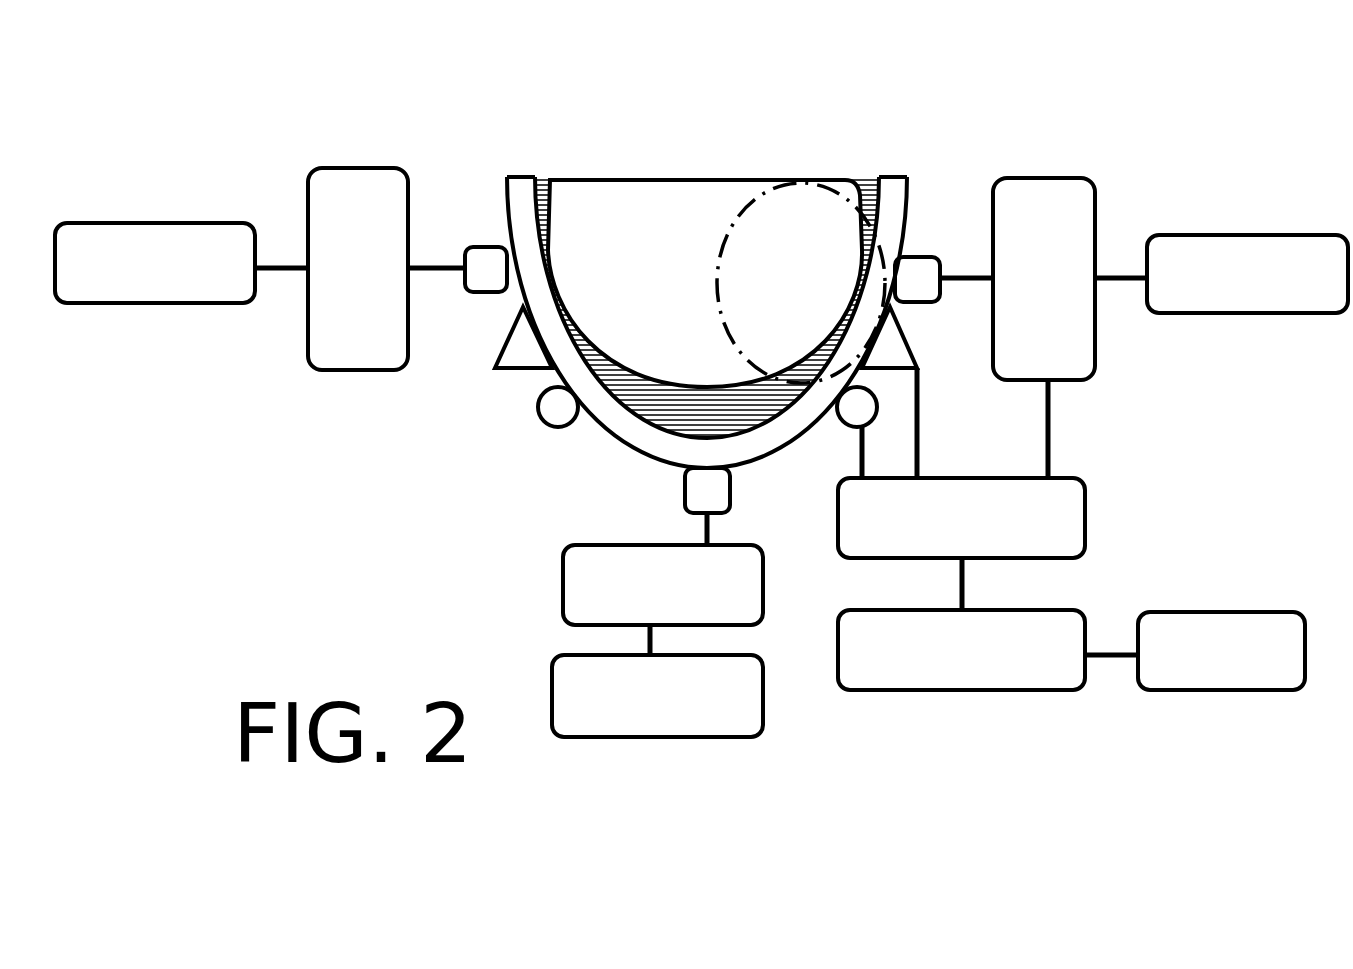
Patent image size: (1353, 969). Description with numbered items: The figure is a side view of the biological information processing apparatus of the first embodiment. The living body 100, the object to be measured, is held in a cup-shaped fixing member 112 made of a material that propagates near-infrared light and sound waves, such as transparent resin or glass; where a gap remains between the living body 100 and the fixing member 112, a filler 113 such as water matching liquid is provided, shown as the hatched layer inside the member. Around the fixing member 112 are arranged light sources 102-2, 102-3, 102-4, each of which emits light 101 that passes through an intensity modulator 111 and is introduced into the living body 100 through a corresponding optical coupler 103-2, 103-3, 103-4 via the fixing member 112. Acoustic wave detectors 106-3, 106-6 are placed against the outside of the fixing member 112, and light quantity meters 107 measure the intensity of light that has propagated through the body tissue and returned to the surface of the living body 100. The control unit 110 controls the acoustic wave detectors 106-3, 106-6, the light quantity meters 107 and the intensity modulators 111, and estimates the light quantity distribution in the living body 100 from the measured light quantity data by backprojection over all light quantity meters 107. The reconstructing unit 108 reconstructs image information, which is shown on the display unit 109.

The living body 100 is at (705, 283).
The light 101 is at (727, 325).
The light source 102-2 is at (1247, 274).
The light source 102-3 is at (657, 696).
The light source 102-4 is at (155, 263).
The optical coupler 103-2 is at (937, 264).
The optical coupler 103-3 is at (744, 493).
The optical coupler 103-4 is at (463, 254).
The acoustic wave detector 106-3 is at (921, 392).
The acoustic wave detector 106-6 is at (484, 337).
The light quantity meter 107 is at (685, 432).
The reconstructing unit 108 is at (961, 650).
The display unit 109 is at (1221, 651).
The control unit 110 is at (961, 518).
The intensity modulator 111 is at (701, 396).
The fixing member 112 is at (603, 420).
The filler 113 is at (542, 182).